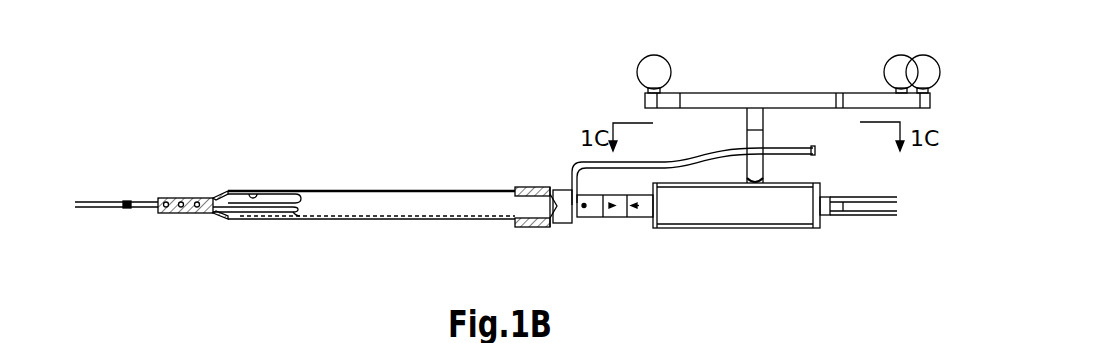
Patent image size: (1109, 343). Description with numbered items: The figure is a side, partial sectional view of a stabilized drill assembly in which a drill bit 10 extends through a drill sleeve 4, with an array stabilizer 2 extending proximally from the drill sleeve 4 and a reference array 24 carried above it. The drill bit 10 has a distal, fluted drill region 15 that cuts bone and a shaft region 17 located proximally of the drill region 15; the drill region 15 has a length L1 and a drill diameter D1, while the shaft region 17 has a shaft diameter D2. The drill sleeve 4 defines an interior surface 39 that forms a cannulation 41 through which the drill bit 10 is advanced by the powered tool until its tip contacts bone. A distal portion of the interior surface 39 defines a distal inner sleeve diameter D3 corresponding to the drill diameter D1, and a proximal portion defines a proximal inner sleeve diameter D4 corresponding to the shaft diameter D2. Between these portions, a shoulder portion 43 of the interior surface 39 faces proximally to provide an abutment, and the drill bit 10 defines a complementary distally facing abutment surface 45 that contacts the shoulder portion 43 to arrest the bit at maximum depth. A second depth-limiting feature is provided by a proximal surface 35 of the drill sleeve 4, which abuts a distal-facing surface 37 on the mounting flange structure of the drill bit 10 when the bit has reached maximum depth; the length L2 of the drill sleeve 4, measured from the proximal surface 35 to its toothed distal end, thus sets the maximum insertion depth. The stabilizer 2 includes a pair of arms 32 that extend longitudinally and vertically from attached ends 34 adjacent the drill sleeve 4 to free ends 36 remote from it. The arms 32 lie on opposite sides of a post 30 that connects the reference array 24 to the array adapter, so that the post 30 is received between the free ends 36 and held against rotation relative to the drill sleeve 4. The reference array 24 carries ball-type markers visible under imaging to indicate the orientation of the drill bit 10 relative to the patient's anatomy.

The array stabilizer 2 is at (571, 160).
The drill sleeve 4 is at (371, 162).
The drill bit 10 is at (390, 210).
The drill region 15 is at (177, 199).
The shaft region 17 is at (323, 205).
The reference array 24 is at (765, 86).
The post 30 is at (765, 168).
The arms 32 is at (709, 150).
The attached ends 34 is at (627, 161).
The proximal surface 35 is at (578, 224).
The free ends 36 is at (816, 150).
The distal-facing surface 37 is at (652, 230).
The interior surface 39 is at (265, 163).
The cannulation 41 is at (254, 193).
The shoulder portion 43 is at (240, 216).
The abutment surface 45 is at (295, 215).
The drill diameter D1 is at (117, 219).
The shaft diameter D2 is at (620, 172).
The distal inner sleeve diameter D3 is at (93, 172).
The proximal inner sleeve diameter D4 is at (532, 243).
The length of drill region L1 is at (200, 203).
The length of drill sleeve L2 is at (577, 228).